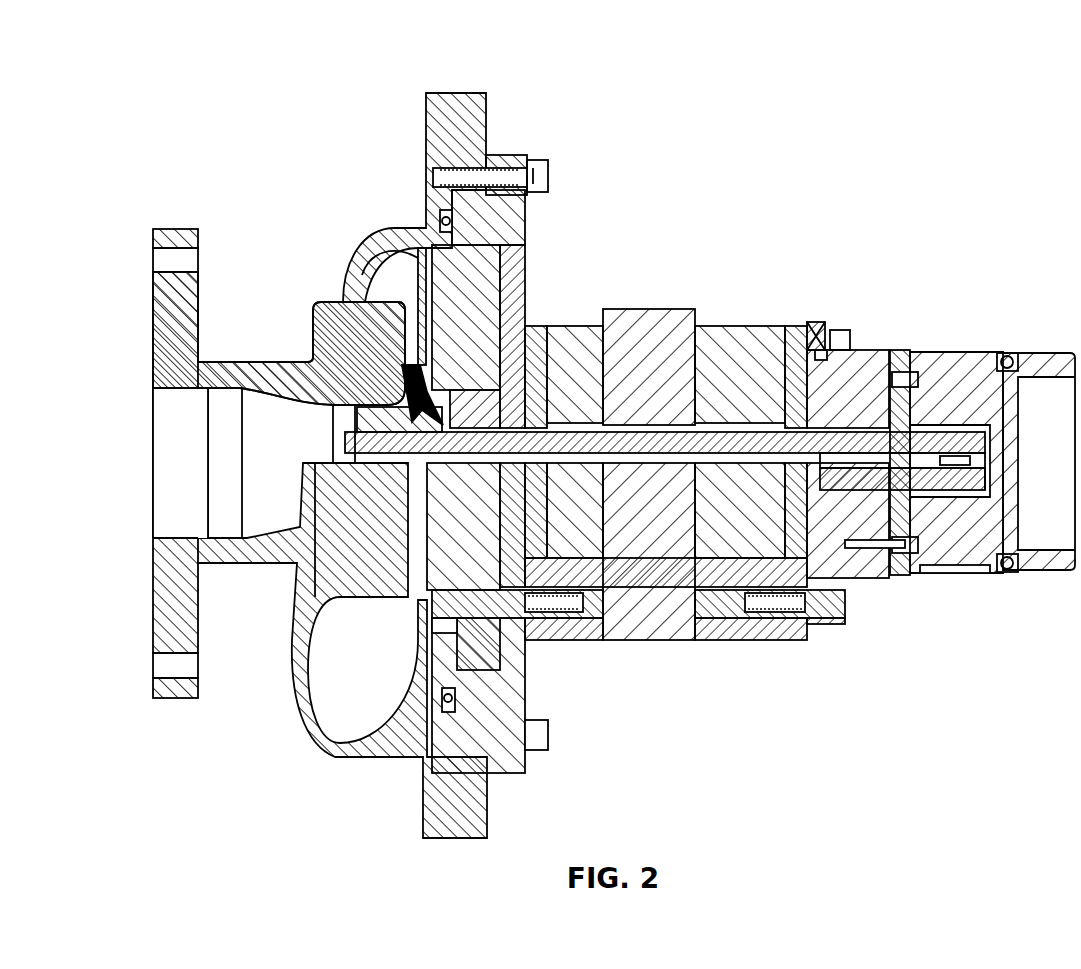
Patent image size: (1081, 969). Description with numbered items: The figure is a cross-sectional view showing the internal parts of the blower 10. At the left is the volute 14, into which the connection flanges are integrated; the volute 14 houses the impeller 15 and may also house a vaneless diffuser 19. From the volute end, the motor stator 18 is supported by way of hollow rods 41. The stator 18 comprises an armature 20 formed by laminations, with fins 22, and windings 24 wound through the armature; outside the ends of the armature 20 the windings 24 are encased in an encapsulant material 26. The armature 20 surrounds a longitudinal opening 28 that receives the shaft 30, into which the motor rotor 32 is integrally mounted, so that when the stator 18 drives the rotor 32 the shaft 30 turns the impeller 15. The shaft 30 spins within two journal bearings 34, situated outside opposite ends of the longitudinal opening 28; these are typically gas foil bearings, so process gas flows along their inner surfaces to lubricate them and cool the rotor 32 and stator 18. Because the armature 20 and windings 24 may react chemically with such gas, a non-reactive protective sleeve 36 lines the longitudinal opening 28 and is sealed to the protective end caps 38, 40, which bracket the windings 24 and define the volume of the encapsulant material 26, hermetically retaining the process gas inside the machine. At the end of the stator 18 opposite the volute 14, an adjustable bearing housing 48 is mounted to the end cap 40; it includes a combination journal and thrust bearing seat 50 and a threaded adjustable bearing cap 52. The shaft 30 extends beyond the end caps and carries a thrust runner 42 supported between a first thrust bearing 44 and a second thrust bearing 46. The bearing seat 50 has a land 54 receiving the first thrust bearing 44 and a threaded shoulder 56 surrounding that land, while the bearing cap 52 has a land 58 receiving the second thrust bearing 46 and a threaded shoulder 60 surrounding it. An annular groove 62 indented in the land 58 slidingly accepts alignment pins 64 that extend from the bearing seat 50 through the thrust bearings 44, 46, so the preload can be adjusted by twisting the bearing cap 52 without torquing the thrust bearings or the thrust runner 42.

The blower 10 is at (328, 70).
The volute 14 is at (372, 757).
The impeller 15 is at (355, 460).
The stator 18 is at (690, 250).
The vaneless diffuser 19 is at (482, 265).
The armature 20 is at (633, 580).
The fins 22 is at (642, 590).
The windings 24 is at (570, 612).
The encapsulant material 26 is at (755, 605).
The longitudinal opening 28 is at (635, 440).
The shaft 30 is at (733, 423).
The motor rotor 32 is at (602, 425).
The journal bearings 34 is at (490, 420).
The protective sleeve 36 is at (745, 425).
The end cap 38 is at (540, 322).
The end cap 40 is at (820, 345).
The hollow rods 41 is at (604, 612).
The thrust runner 42 is at (860, 350).
The first thrust bearing 44 is at (880, 518).
The second thrust bearing 46 is at (916, 405).
The adjustable bearing housing 48 is at (897, 238).
The bearing seat 50 is at (890, 350).
The adjustable bearing cap 52 is at (1038, 350).
The land 54 is at (895, 576).
The threaded shoulder 56 is at (1000, 576).
The land 58 is at (920, 350).
The threaded shoulder 60 is at (975, 350).
The annular groove 62 is at (968, 576).
The alignment pins 64 is at (855, 578).